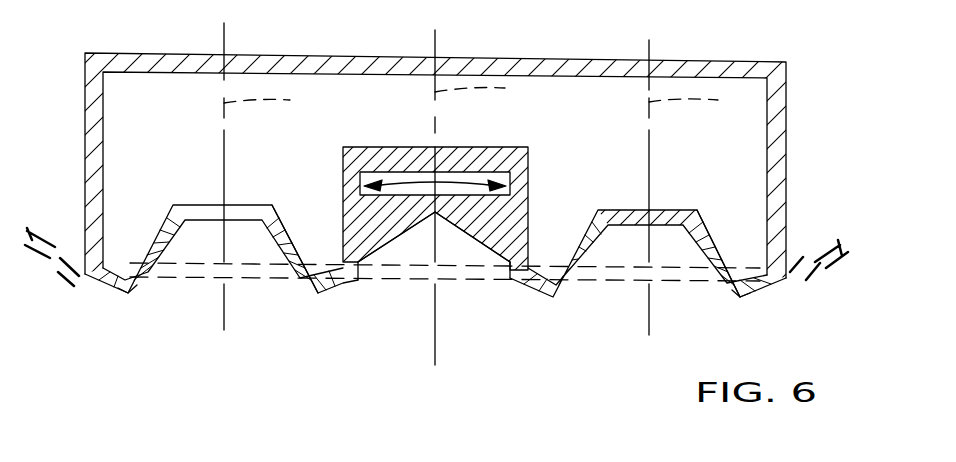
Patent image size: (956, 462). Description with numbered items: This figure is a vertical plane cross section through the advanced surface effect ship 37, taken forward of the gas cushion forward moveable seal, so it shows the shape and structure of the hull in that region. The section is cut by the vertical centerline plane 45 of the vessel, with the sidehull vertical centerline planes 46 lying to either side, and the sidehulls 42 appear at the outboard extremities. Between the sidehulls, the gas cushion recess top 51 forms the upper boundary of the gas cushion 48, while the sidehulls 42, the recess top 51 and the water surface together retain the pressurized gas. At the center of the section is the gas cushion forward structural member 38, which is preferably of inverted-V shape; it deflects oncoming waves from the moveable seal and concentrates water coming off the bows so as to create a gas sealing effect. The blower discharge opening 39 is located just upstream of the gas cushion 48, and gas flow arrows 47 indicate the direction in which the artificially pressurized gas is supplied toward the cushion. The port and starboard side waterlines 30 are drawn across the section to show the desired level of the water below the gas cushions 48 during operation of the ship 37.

The waterlines 30 is at (50, 238).
The advanced surface effect ship 37 is at (786, 130).
The gas cushion forward structural member 38 is at (470, 220).
The blower discharge opening 39 is at (507, 220).
The sidehulls 42 is at (118, 295).
The vertical centerline plane 45 is at (492, 91).
The sidehull vertical centerline planes 46 is at (493, 107).
The gas flow arrows 47 is at (478, 174).
The gas cushion 48 is at (278, 216).
The gas cushion recess top 51 is at (253, 206).